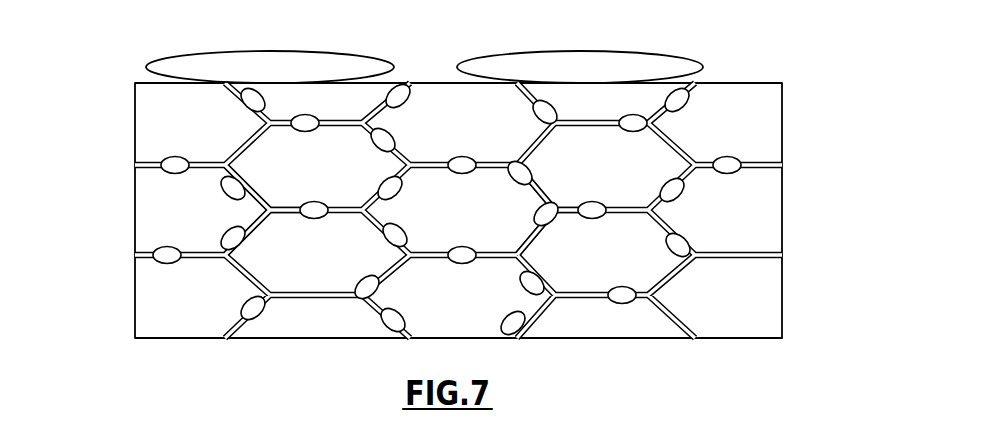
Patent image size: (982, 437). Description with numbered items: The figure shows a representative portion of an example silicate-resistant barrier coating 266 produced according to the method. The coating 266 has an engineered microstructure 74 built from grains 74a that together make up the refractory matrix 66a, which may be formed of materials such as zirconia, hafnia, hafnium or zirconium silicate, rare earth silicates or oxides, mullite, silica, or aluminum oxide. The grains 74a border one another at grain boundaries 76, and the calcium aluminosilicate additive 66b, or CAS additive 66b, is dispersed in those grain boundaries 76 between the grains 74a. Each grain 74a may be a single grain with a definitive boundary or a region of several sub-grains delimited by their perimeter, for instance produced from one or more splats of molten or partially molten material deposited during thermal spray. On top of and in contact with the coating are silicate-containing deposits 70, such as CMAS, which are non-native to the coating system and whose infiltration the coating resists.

The silicate-containing deposit 70 is at (342, 53).
The engineered microstructure 74 is at (132, 198).
The grains 74a is at (498, 298).
The grain boundaries 76 is at (267, 195).
The refractory matrix 66a is at (165, 310).
The calcium aluminosilicate additive 66b is at (268, 324).
The coating 266 is at (795, 82).